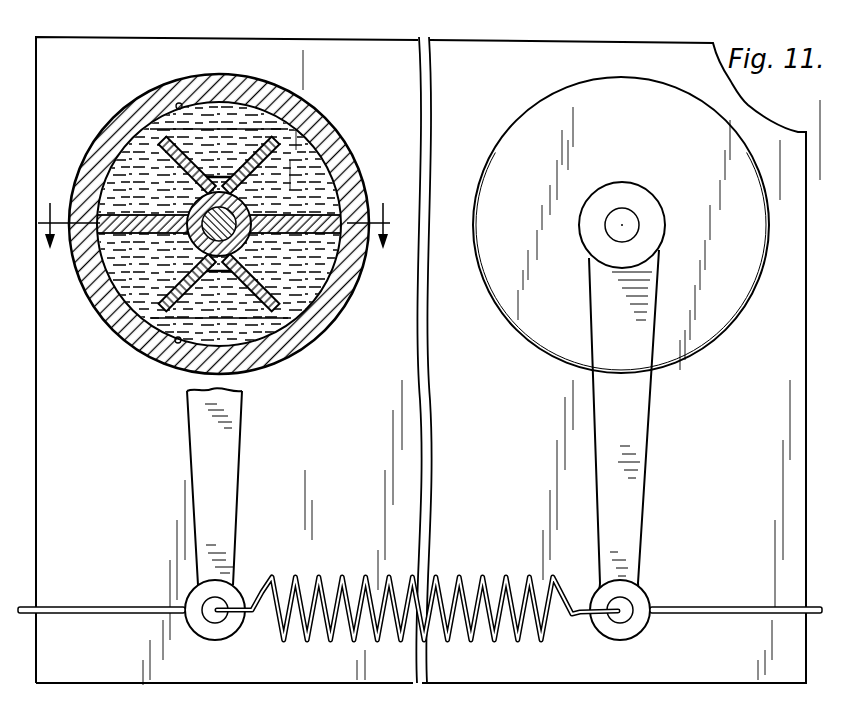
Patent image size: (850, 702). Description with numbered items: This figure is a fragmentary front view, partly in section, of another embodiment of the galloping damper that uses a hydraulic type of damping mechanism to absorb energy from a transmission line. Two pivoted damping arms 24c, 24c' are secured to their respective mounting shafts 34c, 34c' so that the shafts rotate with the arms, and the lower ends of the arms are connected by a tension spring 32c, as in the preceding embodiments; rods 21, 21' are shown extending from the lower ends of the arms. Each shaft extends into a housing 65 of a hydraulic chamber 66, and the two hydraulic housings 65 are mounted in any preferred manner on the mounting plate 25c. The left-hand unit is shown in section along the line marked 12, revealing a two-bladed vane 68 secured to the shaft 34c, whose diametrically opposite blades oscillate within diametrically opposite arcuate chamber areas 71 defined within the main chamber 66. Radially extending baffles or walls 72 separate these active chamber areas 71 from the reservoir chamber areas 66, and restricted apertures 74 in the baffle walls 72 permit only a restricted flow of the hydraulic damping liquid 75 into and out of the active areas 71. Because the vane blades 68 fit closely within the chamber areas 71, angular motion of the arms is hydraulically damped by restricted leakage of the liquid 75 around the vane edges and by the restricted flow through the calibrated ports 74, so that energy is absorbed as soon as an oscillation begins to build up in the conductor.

The mounting plate 25c is at (65, 42).
The housing 65 is at (138, 108).
The hydraulic chamber 66 is at (177, 103).
The hydraulic damping liquid 75 is at (236, 84).
The arcuate chamber areas 71 is at (112, 155).
The baffles or walls 72 is at (246, 161).
The restricted apertures 74 is at (258, 130).
The two-bladed vane 68 is at (88, 280).
The mounting shaft 34c is at (251, 216).
The mounting shaft 34c' is at (622, 207).
The section line 12 is at (223, 210).
The pivoted damping arm 24c is at (187, 514).
The pivoted damping arm 24c' is at (653, 445).
The rod 21 is at (101, 588).
The rod (side view) 21' is at (736, 585).
The tension spring 32c is at (367, 577).